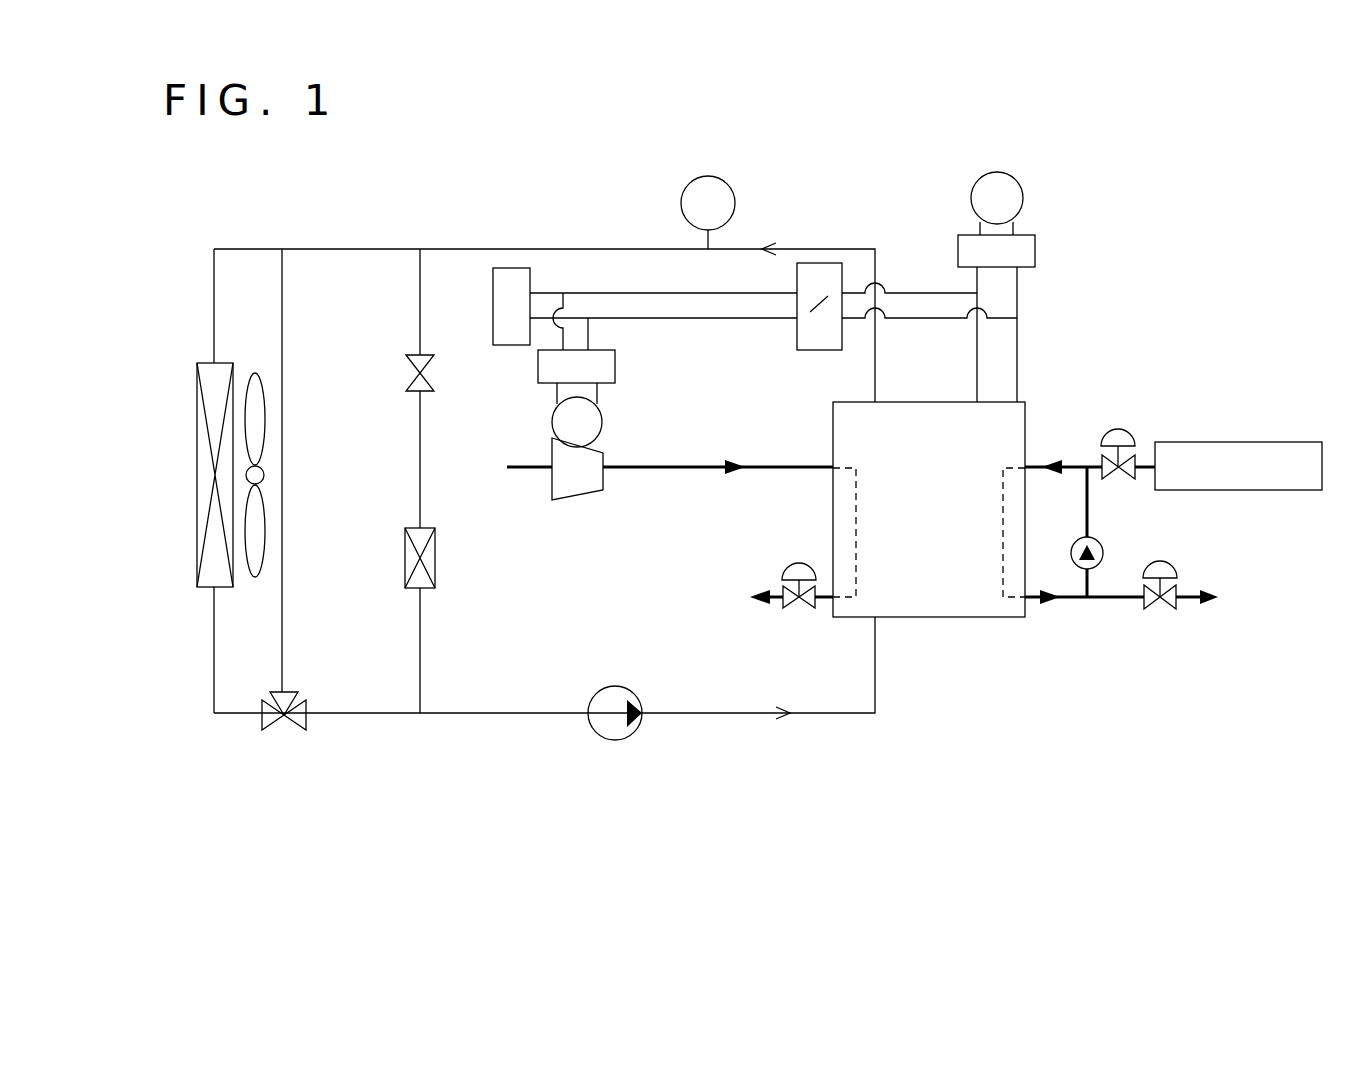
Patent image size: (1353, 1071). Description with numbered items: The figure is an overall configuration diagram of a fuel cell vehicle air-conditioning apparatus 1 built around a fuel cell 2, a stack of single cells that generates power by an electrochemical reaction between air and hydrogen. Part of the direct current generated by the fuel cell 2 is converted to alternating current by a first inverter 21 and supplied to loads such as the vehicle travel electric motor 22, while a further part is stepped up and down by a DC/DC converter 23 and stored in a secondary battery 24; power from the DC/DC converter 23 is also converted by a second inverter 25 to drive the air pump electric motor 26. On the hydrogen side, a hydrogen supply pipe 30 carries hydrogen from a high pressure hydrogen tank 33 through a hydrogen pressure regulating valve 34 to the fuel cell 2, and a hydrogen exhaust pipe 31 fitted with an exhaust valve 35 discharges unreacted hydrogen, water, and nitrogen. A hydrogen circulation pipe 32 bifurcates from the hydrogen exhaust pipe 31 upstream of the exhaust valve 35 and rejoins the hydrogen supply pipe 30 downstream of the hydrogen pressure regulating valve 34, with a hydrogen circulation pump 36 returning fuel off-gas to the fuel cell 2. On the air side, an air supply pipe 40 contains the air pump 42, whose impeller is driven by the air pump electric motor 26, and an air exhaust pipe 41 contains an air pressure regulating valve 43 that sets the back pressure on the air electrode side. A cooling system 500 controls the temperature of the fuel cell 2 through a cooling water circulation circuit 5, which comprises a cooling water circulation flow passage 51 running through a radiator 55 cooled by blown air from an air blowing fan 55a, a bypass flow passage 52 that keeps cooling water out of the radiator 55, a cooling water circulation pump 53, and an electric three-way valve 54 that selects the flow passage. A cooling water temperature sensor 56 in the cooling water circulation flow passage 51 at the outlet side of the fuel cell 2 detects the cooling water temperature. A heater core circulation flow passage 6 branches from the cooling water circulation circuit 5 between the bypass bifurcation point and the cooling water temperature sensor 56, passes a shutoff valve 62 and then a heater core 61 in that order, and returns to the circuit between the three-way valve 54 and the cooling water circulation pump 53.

The fuel cell vehicle air-conditioning apparatus 1 is at (998, 668).
The fuel cell 2 is at (942, 620).
The cooling water circulation circuit 5 is at (330, 248).
The heater core circulation flow passage 6 is at (420, 487).
The first inverter 21 is at (1035, 247).
The vehicle travel electric motor 22 is at (1016, 178).
The DC/DC converter 23 is at (818, 350).
The secondary battery 24 is at (493, 293).
The second inverter 25 is at (615, 365).
The air pump electric motor 26 is at (552, 413).
The hydrogen supply pipe 30 is at (1058, 465).
The hydrogen exhaust pipe 31 is at (1070, 603).
The hydrogen circulation pipe 32 is at (1087, 510).
The high pressure hydrogen tank 33 is at (1235, 442).
The hydrogen pressure regulating valve 34 is at (1122, 428).
The exhaust valve 35 is at (1180, 569).
The hydrogen circulation pump 36 is at (1103, 547).
The air supply pipe 40 is at (773, 465).
The air exhaust pipe 41 is at (826, 602).
The air pump 42 is at (552, 455).
The air pressure regulating valve 43 is at (805, 606).
The cooling water circulation flow passage 51 is at (240, 249).
The bypass flow passage 52 is at (282, 313).
The cooling water circulation pump 53 is at (613, 742).
The electric three-way valve 54 is at (300, 730).
The radiator 55 is at (198, 565).
The air blowing fan 55a is at (256, 578).
The cooling water temperature sensor 56 is at (730, 182).
The heater core 61 is at (405, 566).
The shutoff valve 62 is at (407, 377).
The cooling system 500 is at (443, 727).